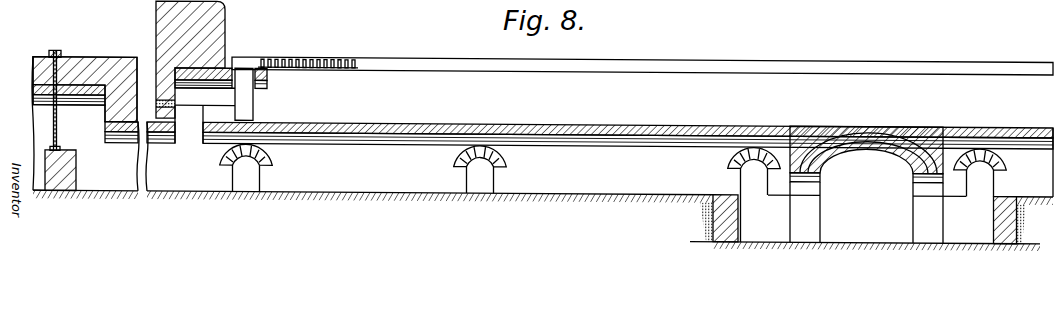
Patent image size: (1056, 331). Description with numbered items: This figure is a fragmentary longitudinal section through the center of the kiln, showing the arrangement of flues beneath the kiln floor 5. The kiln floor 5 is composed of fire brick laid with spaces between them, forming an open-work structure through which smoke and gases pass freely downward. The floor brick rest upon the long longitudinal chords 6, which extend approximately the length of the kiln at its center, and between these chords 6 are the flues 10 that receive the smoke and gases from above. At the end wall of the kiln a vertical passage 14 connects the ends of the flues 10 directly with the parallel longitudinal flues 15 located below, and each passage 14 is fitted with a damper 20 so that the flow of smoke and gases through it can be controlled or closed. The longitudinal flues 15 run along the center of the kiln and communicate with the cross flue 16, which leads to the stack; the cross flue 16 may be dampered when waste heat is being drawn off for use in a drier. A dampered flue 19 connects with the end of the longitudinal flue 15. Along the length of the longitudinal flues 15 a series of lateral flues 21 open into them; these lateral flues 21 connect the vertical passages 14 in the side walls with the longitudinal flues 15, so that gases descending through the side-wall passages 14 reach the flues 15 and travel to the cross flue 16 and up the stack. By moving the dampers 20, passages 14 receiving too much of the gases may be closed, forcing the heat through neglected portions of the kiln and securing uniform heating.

The kiln floor 5 is at (333, 58).
The longitudinal chords 6 is at (697, 68).
The flues 10 is at (579, 143).
The vertical passages 14 is at (192, 142).
The parallel longitudinal flues 15 is at (543, 183).
The cross flue 16 is at (865, 188).
The dampered flues 19 is at (44, 125).
The dampers 20 is at (189, 124).
The lateral flues 21 is at (249, 175).